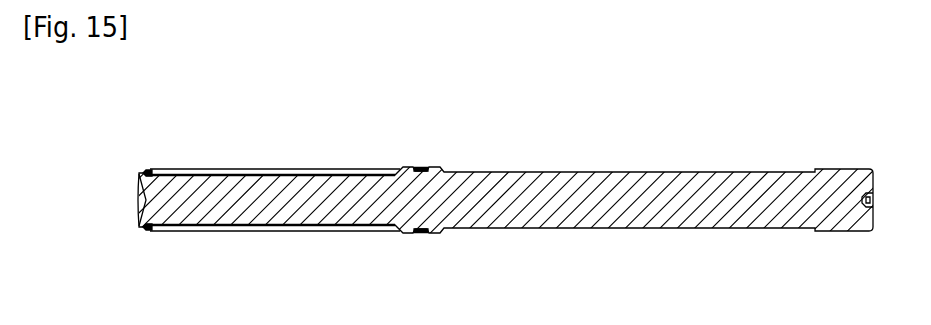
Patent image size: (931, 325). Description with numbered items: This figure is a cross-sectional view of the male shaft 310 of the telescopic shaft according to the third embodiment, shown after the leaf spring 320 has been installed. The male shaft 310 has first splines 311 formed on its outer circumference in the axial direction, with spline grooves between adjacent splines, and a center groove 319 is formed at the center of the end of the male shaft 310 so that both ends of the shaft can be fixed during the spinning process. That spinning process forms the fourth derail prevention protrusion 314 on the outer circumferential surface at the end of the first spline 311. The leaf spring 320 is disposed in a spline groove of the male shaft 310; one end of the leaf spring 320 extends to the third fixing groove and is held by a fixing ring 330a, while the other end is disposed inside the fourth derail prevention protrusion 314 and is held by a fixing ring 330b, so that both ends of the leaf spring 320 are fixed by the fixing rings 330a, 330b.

The male shaft 310 is at (580, 148).
The first spline 311 is at (268, 168).
The fourth derail prevention protrusion 314 is at (143, 167).
The center groove 319 is at (138, 202).
The leaf spring 320 is at (243, 233).
The fixing ring 330a is at (422, 168).
The fixing ring 330b is at (150, 233).